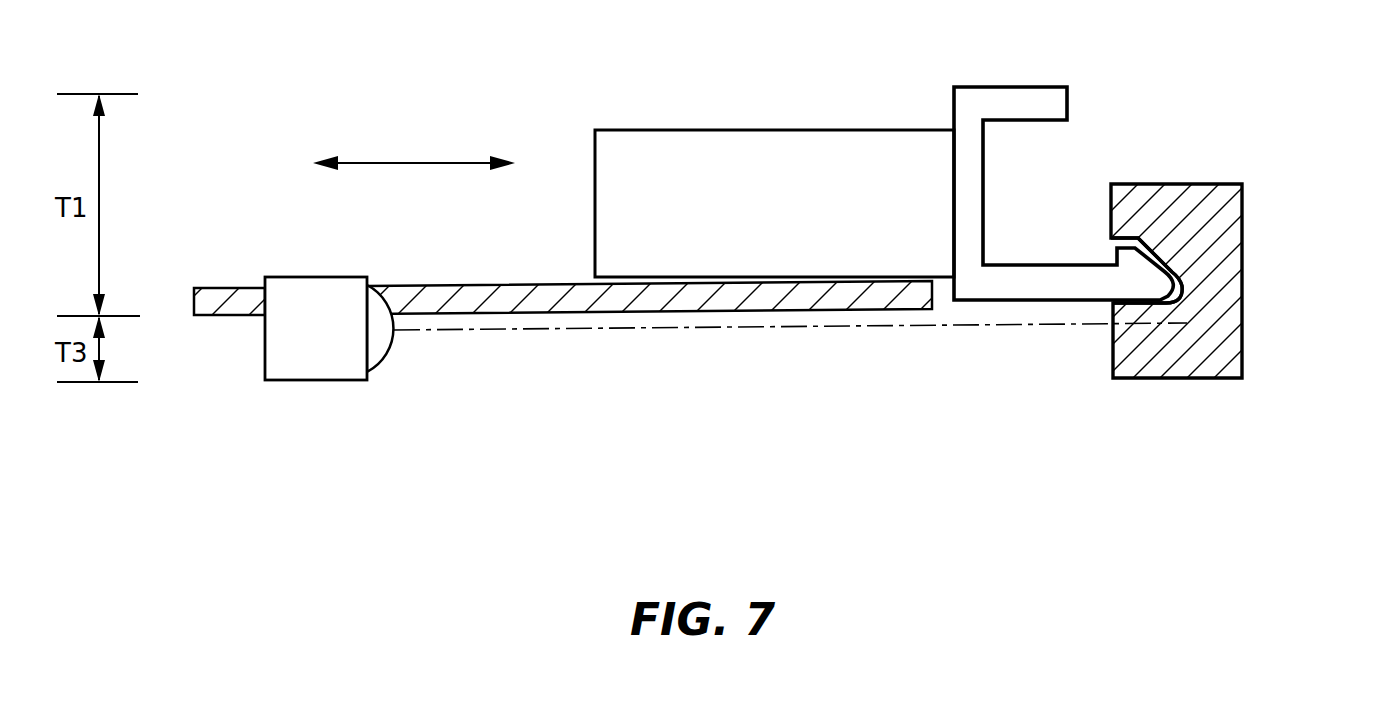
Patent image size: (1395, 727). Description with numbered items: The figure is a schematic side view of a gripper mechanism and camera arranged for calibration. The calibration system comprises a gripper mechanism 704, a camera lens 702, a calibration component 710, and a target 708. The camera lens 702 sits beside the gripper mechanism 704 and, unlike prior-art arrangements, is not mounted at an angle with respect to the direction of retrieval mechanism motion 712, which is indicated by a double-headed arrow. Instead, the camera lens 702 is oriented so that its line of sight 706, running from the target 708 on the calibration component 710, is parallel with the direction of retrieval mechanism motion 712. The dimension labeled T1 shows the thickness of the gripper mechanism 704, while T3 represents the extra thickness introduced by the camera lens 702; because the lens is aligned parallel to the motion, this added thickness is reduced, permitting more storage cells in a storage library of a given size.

The camera lens 702 is at (323, 363).
The gripper mechanism 704 is at (793, 157).
The line of sight 706 is at (750, 325).
The target 708 is at (1110, 345).
The calibration component 710 is at (1220, 235).
The direction of retrieval mechanism motion 712 is at (417, 160).